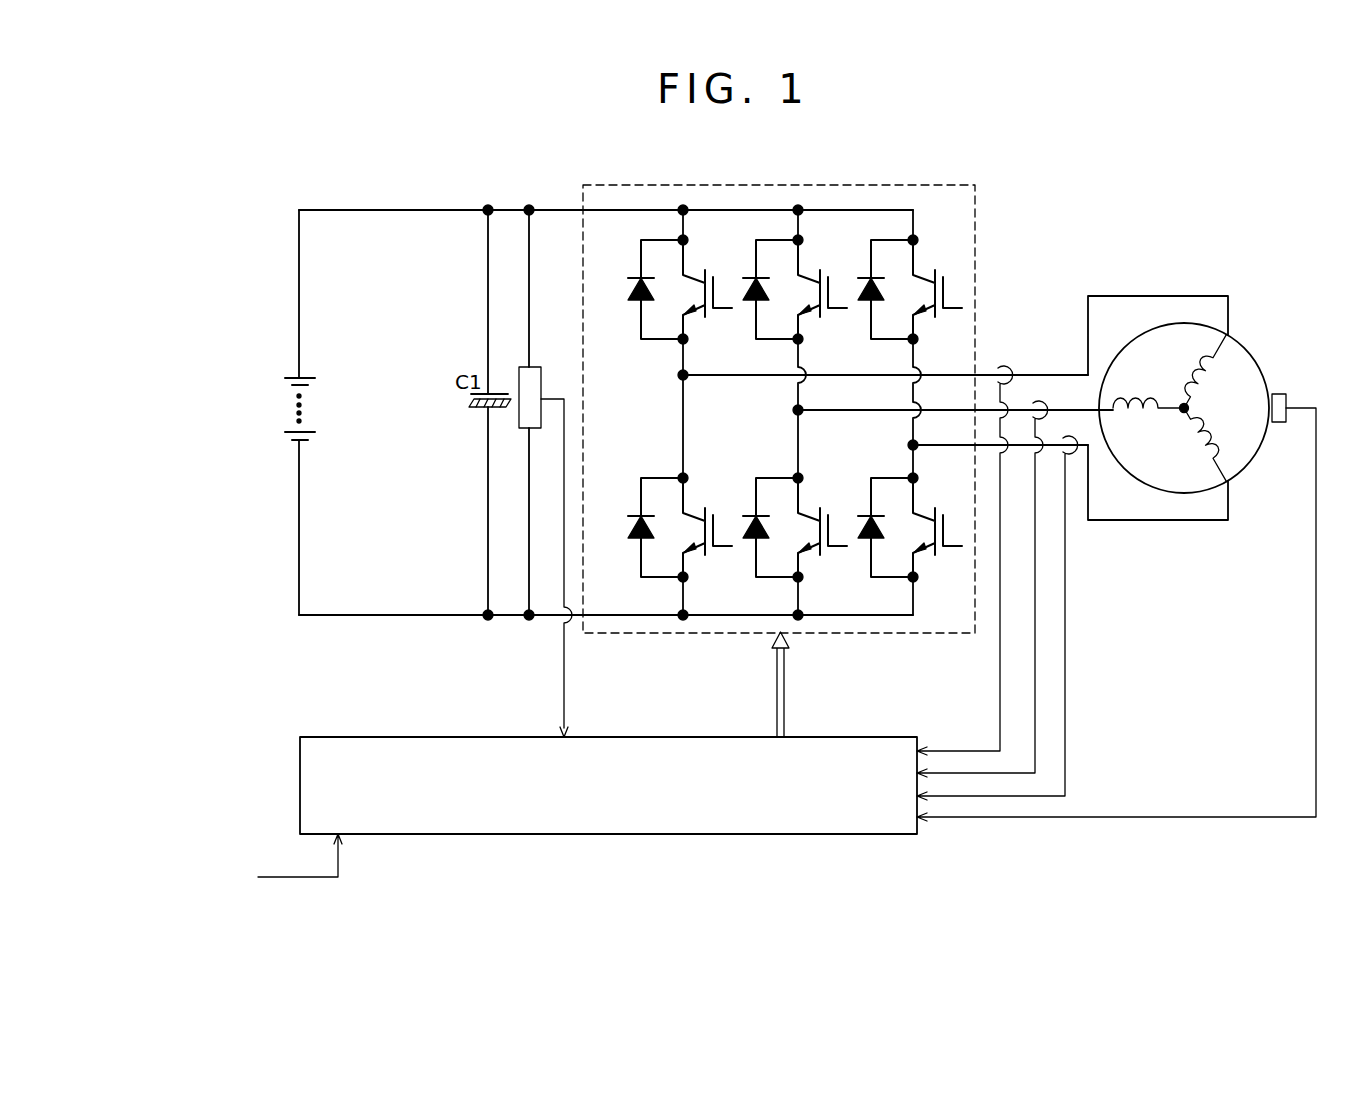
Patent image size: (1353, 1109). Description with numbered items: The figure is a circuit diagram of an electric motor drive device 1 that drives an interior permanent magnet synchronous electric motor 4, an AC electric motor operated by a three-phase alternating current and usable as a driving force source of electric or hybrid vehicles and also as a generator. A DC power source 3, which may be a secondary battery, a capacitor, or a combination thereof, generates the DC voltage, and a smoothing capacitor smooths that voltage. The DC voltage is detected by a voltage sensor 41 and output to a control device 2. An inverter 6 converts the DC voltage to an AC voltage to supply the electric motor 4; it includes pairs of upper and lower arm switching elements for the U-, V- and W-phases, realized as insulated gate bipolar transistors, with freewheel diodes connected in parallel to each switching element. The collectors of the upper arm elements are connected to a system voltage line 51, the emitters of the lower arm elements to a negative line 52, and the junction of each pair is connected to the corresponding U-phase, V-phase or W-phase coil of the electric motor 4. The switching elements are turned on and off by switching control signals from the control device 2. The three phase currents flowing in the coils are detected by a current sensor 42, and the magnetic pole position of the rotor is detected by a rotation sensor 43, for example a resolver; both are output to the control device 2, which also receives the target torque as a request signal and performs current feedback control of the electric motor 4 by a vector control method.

The electric motor drive device 1 is at (205, 200).
The control device 2 is at (607, 834).
The DC power source 3 is at (309, 376).
The electric motor 4 is at (1251, 357).
The inverter 6 is at (786, 184).
The voltage sensor 41 is at (538, 366).
The current sensor 42 is at (1037, 396).
The rotation sensor 43 is at (1281, 394).
The system voltage line 51 is at (553, 209).
The negative line 52 is at (468, 616).